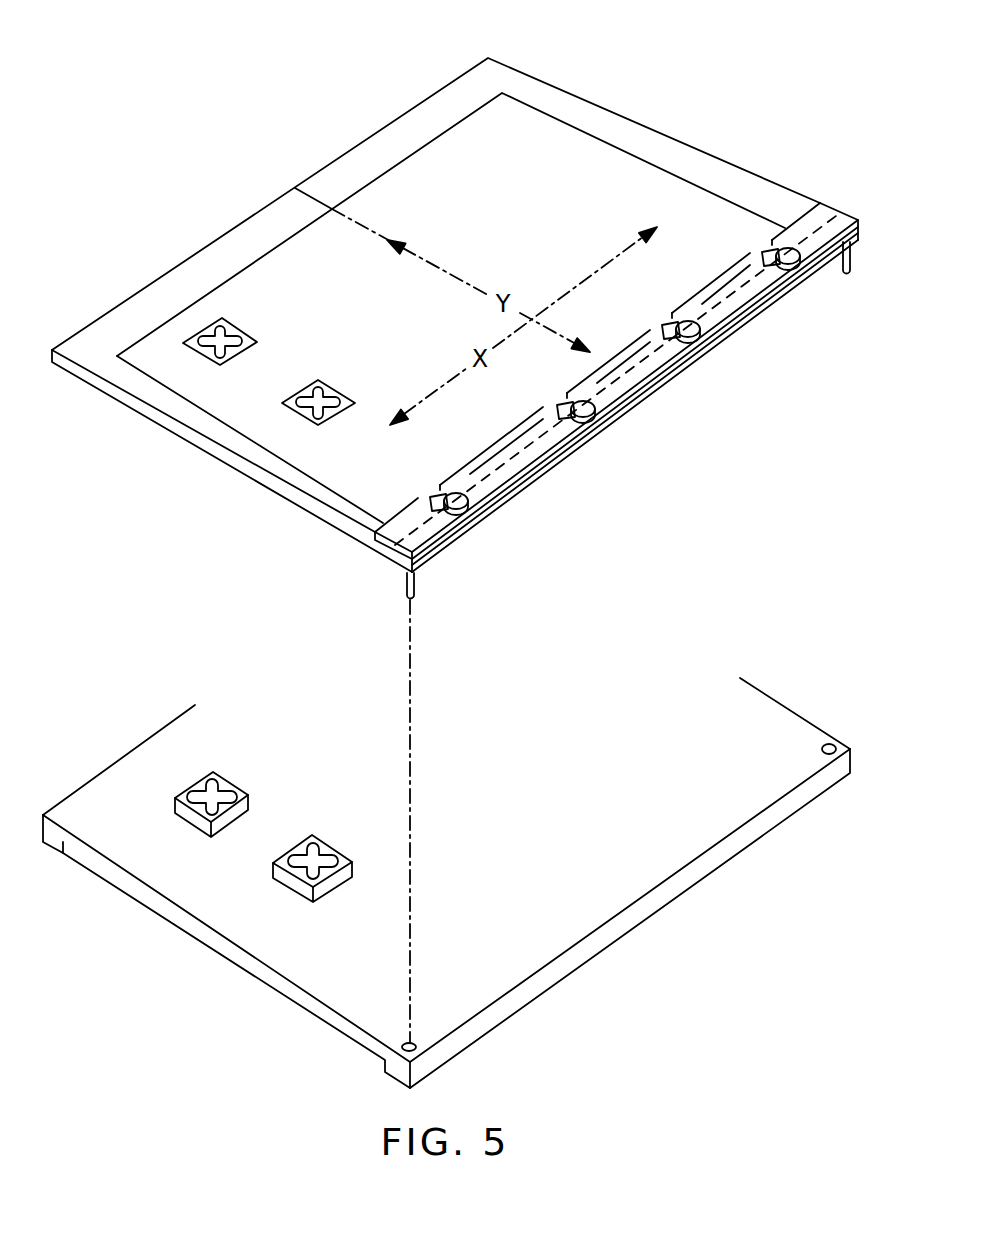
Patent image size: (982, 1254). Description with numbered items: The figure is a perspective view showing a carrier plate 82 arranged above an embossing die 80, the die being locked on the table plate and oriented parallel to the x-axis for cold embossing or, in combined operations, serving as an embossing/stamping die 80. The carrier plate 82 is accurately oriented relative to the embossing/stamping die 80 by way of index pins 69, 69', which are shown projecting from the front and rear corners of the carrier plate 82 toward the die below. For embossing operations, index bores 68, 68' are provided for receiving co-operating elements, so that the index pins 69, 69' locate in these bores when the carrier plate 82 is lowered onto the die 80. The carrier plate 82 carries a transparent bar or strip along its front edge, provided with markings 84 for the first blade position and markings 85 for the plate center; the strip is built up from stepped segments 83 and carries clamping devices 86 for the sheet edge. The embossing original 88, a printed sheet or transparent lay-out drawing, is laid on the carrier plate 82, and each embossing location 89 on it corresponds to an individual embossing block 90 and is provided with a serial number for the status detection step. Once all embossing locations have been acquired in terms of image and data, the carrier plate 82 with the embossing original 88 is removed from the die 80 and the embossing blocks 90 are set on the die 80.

The embossing die 80 is at (662, 840).
The carrier plate 82 is at (224, 240).
The rail pad 83 is at (533, 442).
The marking for first blade position 84 is at (487, 465).
The marking for plate center 85 is at (630, 380).
The clamping device 86 is at (690, 338).
The embossing original 88 is at (515, 117).
The embossing location 89 is at (215, 355).
The embossing block 90 is at (212, 806).
The hole 68 is at (839, 790).
The index bore 68' is at (471, 1055).
The index pin 69 is at (831, 294).
The index pin 69' is at (383, 605).